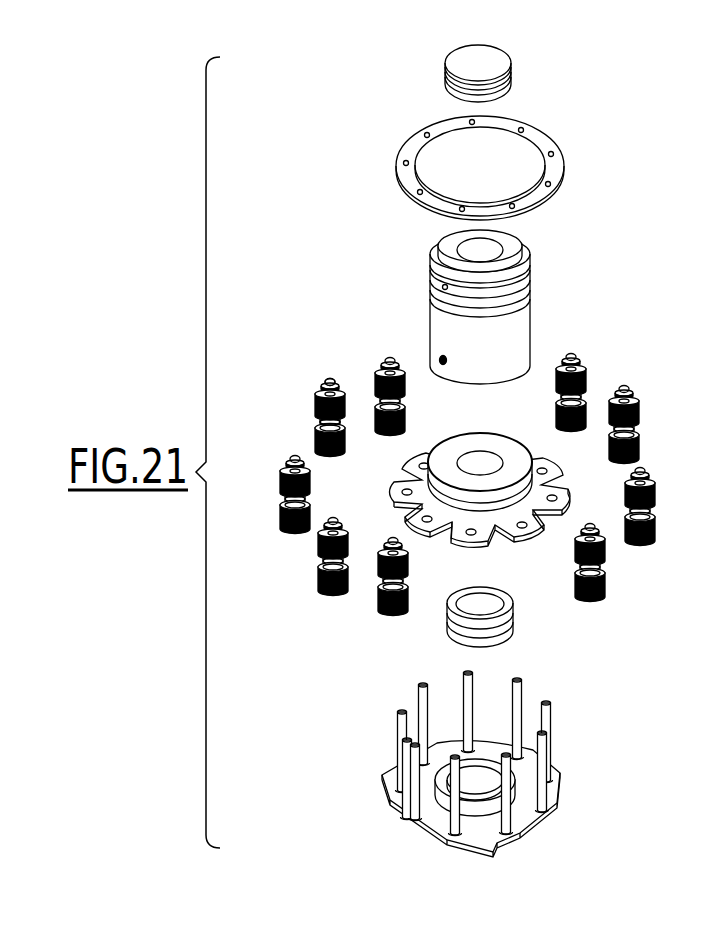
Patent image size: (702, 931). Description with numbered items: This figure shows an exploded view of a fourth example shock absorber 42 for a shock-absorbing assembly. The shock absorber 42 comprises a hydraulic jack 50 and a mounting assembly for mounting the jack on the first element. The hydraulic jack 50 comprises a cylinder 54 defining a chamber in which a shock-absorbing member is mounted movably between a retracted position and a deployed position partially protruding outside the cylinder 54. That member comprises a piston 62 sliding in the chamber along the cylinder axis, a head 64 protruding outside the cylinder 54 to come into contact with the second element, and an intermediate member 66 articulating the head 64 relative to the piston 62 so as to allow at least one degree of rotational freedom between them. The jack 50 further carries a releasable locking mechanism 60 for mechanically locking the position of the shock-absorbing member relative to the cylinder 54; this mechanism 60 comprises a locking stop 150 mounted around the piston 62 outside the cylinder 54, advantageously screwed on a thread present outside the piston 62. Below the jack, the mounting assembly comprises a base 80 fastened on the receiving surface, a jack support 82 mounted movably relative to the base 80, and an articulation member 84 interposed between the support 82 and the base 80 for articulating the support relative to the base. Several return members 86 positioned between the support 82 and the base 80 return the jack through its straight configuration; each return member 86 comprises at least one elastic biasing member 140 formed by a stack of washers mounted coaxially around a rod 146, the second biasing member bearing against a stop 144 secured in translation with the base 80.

The shock absorber 42 is at (582, 96).
The hydraulic jack 50 is at (469, 304).
The cylinder 54 is at (437, 318).
The releasable mechanism 60 is at (459, 253).
The piston 62 is at (452, 246).
The head 64 is at (476, 75).
The intermediate member 66 is at (447, 96).
The base 80 is at (440, 823).
The jack support 82 is at (458, 500).
The articulation member 84 is at (510, 626).
The return member 86 is at (601, 618).
The elastic biasing member 140 is at (306, 416).
The stop 144 is at (325, 378).
The central rod 146 is at (319, 427).
The locking stop 150 is at (530, 265).